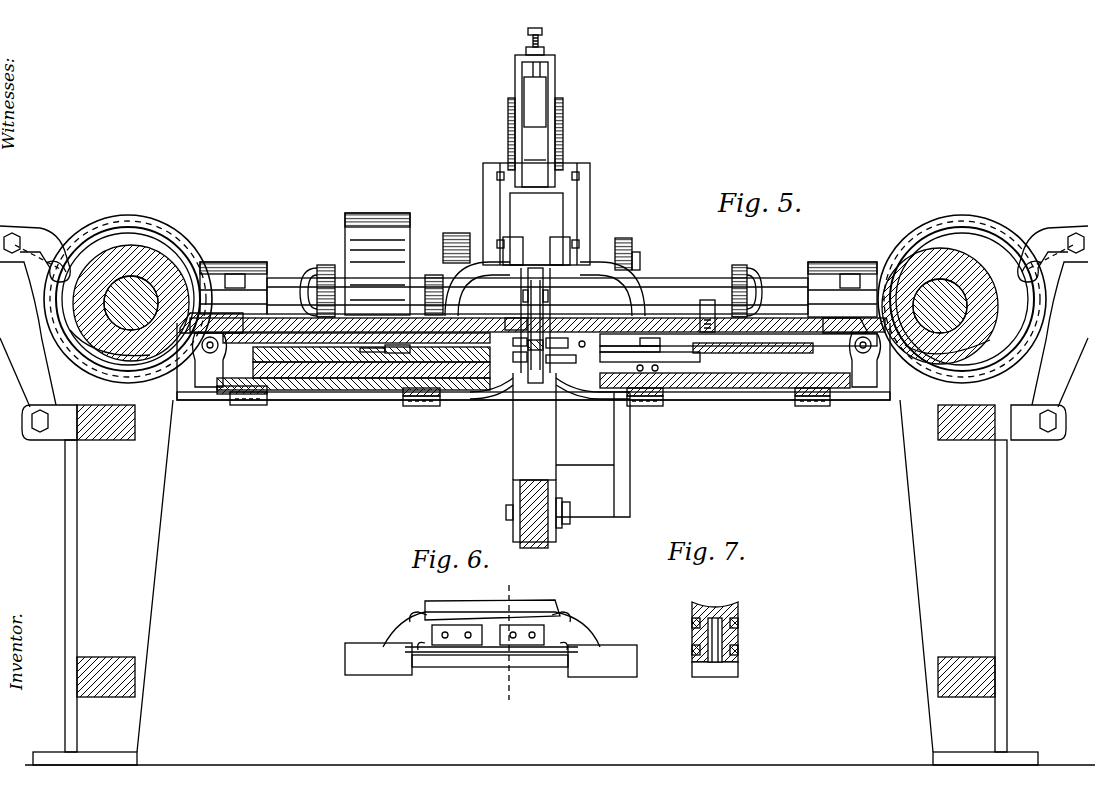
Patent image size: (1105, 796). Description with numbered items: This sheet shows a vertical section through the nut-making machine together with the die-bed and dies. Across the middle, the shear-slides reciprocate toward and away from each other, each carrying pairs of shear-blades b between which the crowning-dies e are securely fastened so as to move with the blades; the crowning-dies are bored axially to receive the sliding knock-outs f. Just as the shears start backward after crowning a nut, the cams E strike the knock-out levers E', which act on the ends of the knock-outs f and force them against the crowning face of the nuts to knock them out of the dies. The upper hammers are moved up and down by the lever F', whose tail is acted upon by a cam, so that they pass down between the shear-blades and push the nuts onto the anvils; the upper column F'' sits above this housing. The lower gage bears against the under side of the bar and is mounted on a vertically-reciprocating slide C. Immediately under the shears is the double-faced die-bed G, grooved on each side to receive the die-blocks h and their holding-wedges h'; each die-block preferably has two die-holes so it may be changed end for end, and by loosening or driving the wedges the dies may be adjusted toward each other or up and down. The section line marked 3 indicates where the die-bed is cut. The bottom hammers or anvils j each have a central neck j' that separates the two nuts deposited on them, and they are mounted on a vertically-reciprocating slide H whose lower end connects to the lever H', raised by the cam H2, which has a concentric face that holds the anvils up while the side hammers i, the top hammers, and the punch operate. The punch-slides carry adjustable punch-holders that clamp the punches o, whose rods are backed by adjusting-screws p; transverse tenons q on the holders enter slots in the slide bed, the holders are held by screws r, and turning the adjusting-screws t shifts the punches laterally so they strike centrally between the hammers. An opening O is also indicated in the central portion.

In FIG. 5, the knock-out lever E' is at (316, 277).
In FIG. 5, the cam E is at (747, 279).
In FIG. 5, the cam H2 is at (618, 240).
In FIG. 5, the lever F' is at (536, 214).
In FIG. 5, the screw column F'' is at (535, 107).
In FIG. 5, the vertically-reciprocating slide C is at (520, 278).
In FIG. 5, the crowning-die e is at (516, 323).
In FIG. 5, the shear-blade b is at (520, 340).
In FIG. 5, the punch o is at (520, 357).
In FIG. 5, the die-bed G is at (557, 342).
In FIG. 6, the die-bed G is at (578, 617).
In FIG. 7, the die-bed G is at (718, 604).
In FIG. 5, the opening O is at (580, 338).
In FIG. 5, the die-block h is at (561, 361).
In FIG. 7, the die-block h is at (710, 640).
In FIG. 6, the holding-wedge h' is at (489, 622).
In FIG. 7, the holding-wedge h' is at (719, 629).
In FIG. 5, the central neck j' is at (535, 356).
In FIG. 5, the bottom hammer j is at (534, 426).
In FIG. 5, the adjusting-screw p is at (355, 378).
In FIG. 5, the side hammer i is at (753, 347).
In FIG. 5, the adjusting-screw t is at (725, 378).
In FIG. 5, the tenon q is at (650, 360).
In FIG. 5, the screw r is at (630, 356).
In FIG. 5, the knock-out f is at (707, 313).
In FIG. 5, the vertically-reciprocating slide H is at (538, 500).
In FIG. 5, the lever H' is at (608, 455).
In FIG. 6, the section line 3 is at (508, 642).